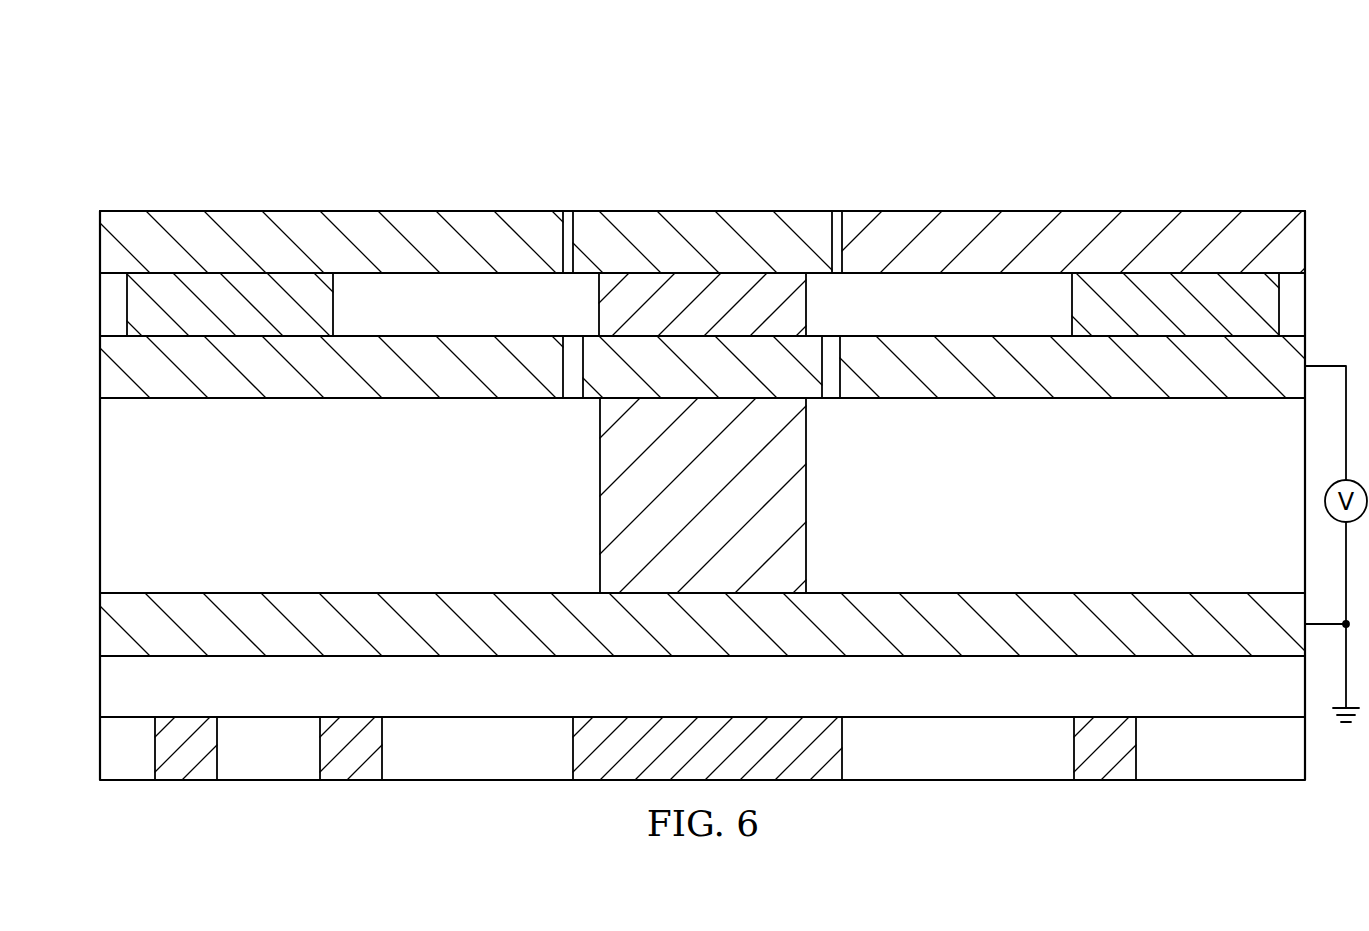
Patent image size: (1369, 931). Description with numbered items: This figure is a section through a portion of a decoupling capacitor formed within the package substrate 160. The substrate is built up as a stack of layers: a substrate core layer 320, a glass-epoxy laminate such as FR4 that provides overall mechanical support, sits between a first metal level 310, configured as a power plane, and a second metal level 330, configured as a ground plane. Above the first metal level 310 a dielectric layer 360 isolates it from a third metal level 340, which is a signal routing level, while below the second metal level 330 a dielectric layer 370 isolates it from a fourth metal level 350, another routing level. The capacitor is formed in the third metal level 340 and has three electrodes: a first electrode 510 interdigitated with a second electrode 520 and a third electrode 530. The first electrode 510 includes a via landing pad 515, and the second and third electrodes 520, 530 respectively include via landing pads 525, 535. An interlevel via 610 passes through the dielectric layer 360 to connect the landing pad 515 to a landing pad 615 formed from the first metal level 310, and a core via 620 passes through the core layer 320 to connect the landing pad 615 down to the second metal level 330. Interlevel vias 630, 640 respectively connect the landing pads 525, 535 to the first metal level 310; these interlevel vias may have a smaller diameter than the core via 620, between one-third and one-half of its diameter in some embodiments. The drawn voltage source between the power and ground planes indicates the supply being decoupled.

The package substrate 160 is at (948, 99).
The first metal level 310 is at (94, 337).
The substrate core layer 320 is at (94, 399).
The second metal level 330 is at (94, 594).
The third metal level 340 is at (94, 212).
The fourth metal level 350 is at (94, 718).
The dielectric layer 360 is at (94, 274).
The dielectric layer 370 is at (94, 657).
The first electrode 510 is at (738, 207).
The via landing pad 515 is at (667, 207).
The second electrode 520 is at (425, 205).
The via landing pad 525 is at (332, 205).
The third electrode 530 is at (980, 205).
The via landing pad 535 is at (1305, 205).
The interlevel via 610 is at (798, 308).
The landing pad 615 is at (684, 380).
The core via 620 is at (683, 510).
The interlevel via 630 is at (327, 309).
The interlevel via 640 is at (1079, 310).